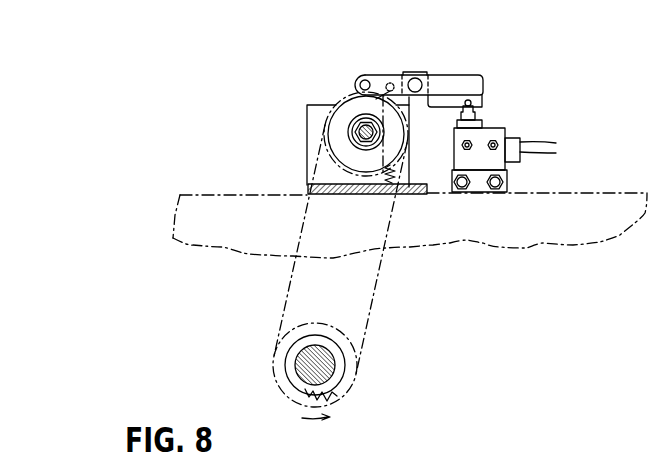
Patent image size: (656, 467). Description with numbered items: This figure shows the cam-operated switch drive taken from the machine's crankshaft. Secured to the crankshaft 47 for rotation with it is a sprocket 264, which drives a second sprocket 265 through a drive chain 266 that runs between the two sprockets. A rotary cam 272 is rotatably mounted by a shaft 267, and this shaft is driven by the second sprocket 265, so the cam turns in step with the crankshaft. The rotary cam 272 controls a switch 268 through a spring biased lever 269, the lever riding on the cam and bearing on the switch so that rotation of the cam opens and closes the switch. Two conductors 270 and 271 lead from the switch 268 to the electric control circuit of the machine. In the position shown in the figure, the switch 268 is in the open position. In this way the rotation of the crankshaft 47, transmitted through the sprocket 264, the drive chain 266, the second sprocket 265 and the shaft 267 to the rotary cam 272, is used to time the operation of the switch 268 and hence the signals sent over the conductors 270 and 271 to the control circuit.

The crankshaft 47 is at (298, 364).
The sprocket 264 is at (333, 390).
The second sprocket 265 is at (350, 98).
The drive chain 266 is at (288, 287).
The shaft 267 is at (357, 131).
The switch 268 is at (495, 162).
The spring biased lever 269 is at (445, 80).
The conductor 270 is at (548, 140).
The conductor 271 is at (550, 155).
The rotary cam 272 is at (330, 148).